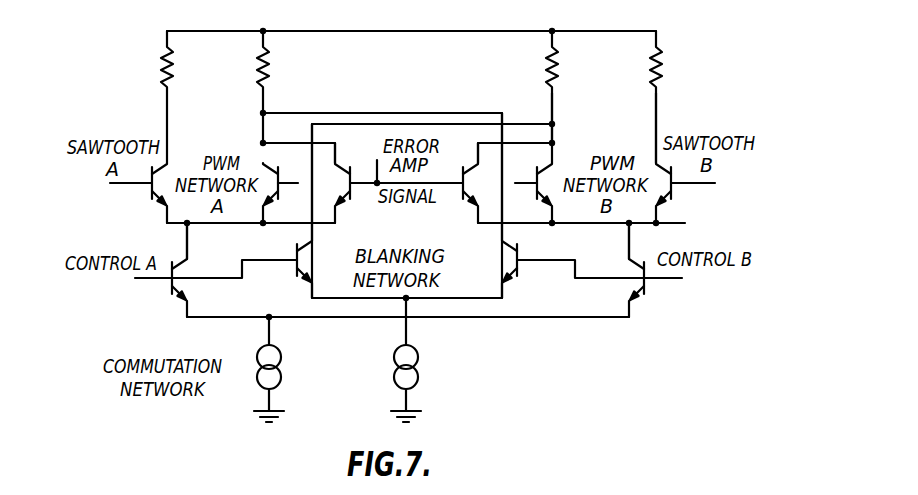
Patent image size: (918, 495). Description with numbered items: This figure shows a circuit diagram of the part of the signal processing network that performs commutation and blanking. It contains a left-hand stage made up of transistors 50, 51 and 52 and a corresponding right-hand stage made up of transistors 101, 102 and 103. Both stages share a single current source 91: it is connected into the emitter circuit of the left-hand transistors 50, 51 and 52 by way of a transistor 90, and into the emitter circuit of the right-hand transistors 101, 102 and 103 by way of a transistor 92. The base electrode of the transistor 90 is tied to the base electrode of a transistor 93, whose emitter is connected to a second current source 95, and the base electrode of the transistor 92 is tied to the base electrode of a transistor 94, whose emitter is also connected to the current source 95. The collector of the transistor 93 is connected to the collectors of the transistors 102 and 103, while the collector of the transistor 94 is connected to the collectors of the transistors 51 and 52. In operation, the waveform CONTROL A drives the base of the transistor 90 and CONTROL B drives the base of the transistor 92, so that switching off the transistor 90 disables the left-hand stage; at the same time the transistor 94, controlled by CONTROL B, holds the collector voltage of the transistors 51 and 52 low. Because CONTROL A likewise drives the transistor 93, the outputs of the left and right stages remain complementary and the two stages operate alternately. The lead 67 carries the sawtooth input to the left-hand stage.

The sawtooth A input lead 67 is at (130, 190).
The transistor 50 is at (160, 202).
The transistor 52 is at (272, 194).
The transistor 51 is at (340, 200).
The transistor 102 is at (472, 201).
The transistor 103 is at (544, 180).
The transistor 101 is at (664, 201).
The transistor 90 is at (178, 296).
The transistor 93 is at (300, 282).
The transistor 94 is at (511, 280).
The transistor 92 is at (639, 299).
The current source 91 is at (283, 366).
The current source 95 is at (420, 366).